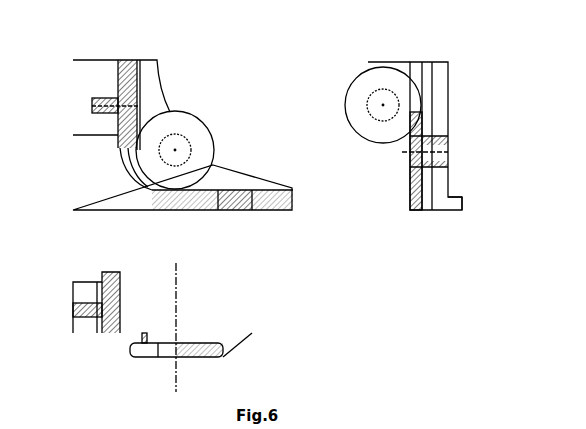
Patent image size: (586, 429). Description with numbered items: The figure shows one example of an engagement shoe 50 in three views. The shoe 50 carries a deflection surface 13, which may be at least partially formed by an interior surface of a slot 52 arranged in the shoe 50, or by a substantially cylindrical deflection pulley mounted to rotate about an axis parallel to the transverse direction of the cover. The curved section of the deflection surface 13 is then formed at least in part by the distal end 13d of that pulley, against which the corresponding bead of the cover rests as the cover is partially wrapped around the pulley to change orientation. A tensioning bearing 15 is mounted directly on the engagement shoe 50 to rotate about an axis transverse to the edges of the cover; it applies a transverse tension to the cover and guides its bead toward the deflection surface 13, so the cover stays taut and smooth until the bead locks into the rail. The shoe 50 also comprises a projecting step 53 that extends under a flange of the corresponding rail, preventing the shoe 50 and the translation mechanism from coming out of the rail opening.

The deflection surface 13 is at (218, 133).
The distal end of the deflection pulley 13d is at (436, 124).
The tensioning bearing 15 is at (118, 80).
The engagement shoe 50 is at (187, 88).
The slot 52 is at (132, 58).
The projecting step 53 is at (455, 194).